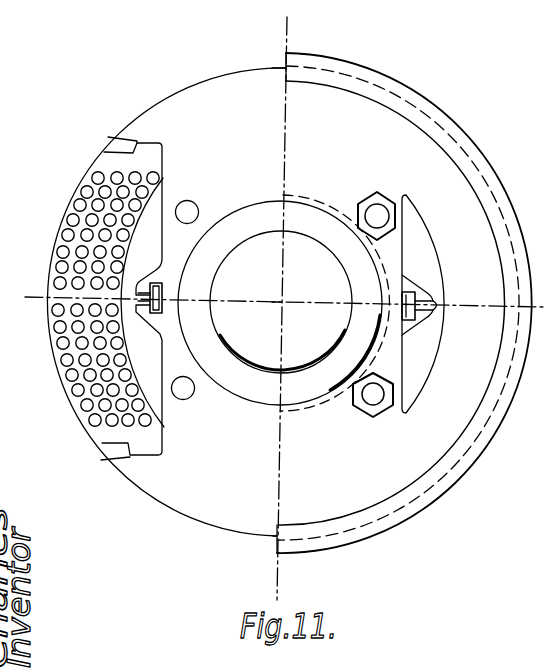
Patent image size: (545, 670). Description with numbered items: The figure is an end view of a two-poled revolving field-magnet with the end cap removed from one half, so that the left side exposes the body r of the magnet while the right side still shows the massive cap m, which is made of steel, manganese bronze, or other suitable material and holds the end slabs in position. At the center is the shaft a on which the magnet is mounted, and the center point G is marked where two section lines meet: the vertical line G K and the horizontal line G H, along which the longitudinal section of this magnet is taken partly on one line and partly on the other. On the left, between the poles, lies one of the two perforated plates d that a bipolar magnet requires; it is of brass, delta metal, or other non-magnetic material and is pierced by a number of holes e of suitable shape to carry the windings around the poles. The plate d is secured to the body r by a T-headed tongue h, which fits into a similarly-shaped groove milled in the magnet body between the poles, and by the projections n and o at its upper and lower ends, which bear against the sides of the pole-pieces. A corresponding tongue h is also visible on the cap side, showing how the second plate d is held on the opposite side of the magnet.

The shaft a is at (281, 303).
The perforated plate d is at (124, 264).
The holes e is at (70, 221).
The T-headed tongue h is at (162, 298).
The projection n is at (120, 144).
The projection o is at (115, 456).
The body of the magnet r is at (166, 302).
The cap m is at (402, 303).
The section line point G is at (290, 303).
The section line point H is at (273, 292).
The section line point K is at (296, 302).